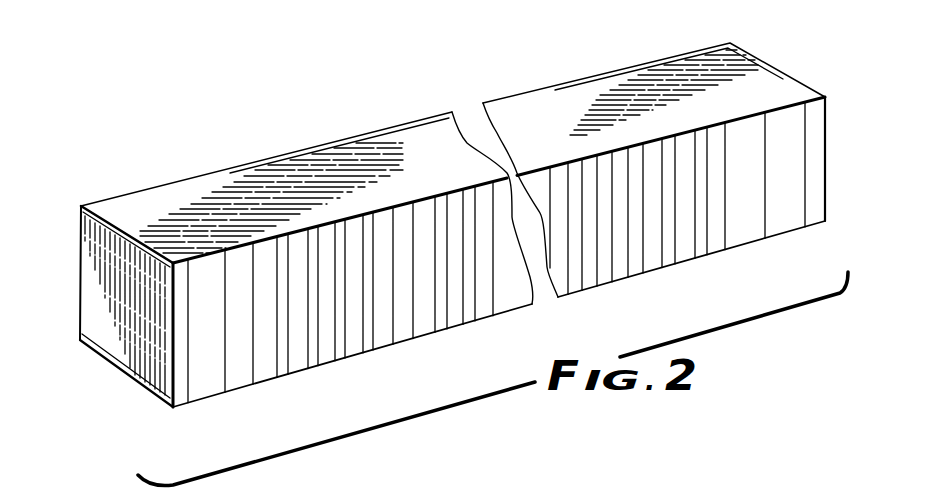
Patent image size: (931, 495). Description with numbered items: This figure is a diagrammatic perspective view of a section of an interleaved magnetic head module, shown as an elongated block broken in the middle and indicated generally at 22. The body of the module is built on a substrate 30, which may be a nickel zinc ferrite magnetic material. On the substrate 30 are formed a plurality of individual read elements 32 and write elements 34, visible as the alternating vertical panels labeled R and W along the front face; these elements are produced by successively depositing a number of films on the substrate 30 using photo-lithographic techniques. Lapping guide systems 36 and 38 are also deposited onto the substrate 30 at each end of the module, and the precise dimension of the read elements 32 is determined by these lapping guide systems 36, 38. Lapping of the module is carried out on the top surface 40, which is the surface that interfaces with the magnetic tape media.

The housing body 22 is at (798, 79).
The top surface 30 is at (128, 207).
The write segment (W) 32 is at (298, 362).
The read segment (R) 34 is at (267, 370).
The end face 36 is at (205, 387).
The side face 38 is at (787, 222).
The shaded top surface region 40 is at (371, 152).